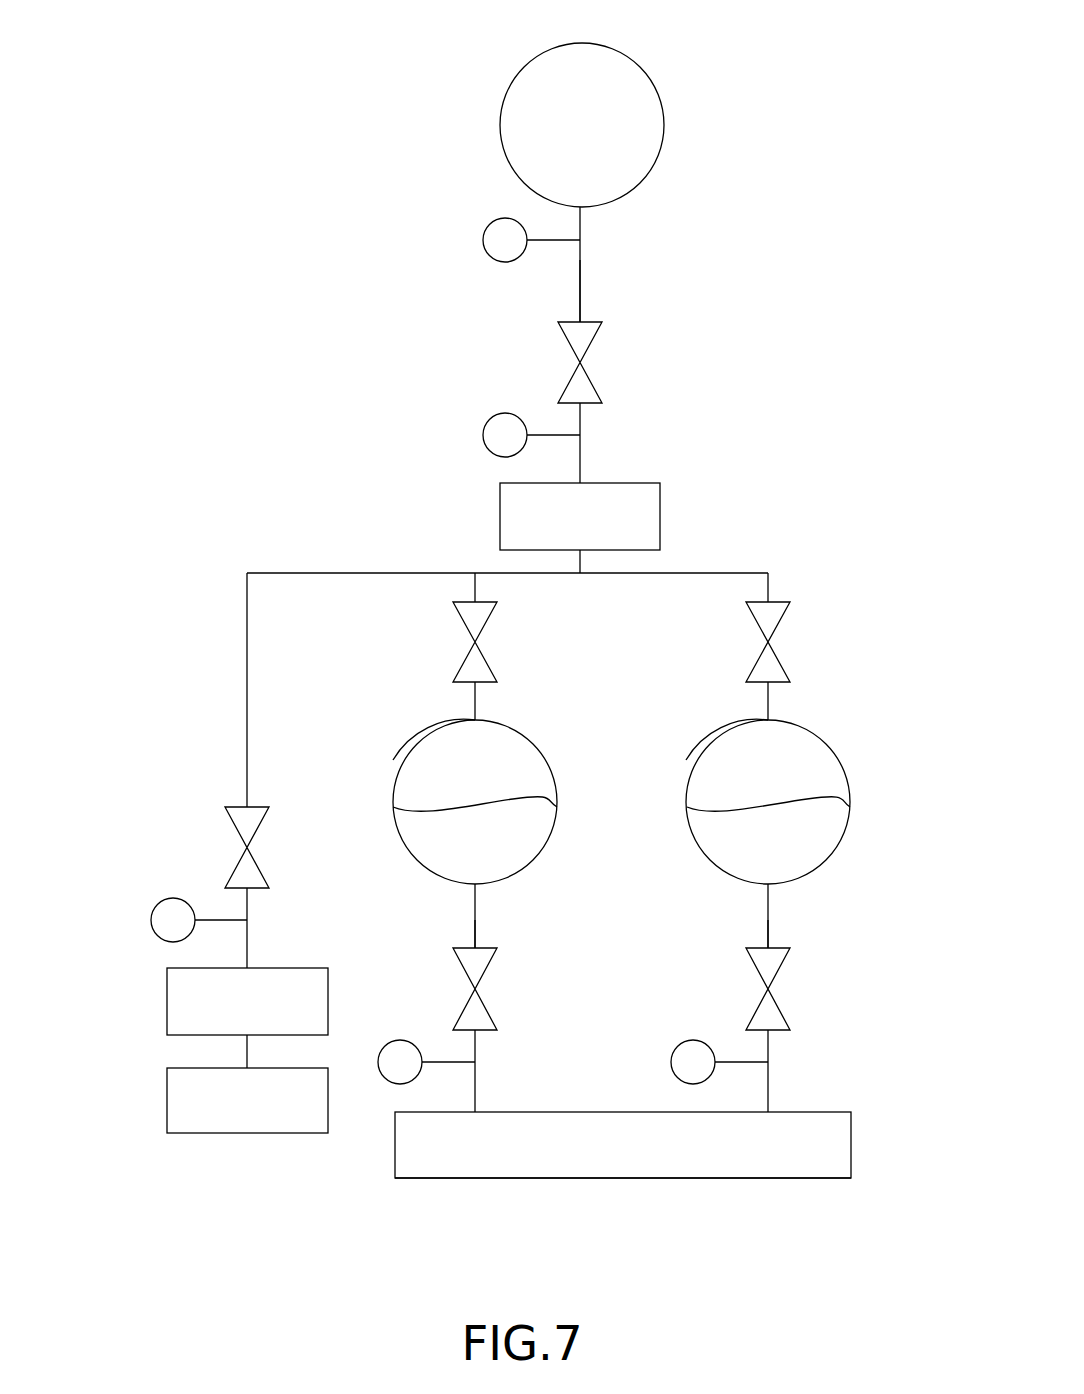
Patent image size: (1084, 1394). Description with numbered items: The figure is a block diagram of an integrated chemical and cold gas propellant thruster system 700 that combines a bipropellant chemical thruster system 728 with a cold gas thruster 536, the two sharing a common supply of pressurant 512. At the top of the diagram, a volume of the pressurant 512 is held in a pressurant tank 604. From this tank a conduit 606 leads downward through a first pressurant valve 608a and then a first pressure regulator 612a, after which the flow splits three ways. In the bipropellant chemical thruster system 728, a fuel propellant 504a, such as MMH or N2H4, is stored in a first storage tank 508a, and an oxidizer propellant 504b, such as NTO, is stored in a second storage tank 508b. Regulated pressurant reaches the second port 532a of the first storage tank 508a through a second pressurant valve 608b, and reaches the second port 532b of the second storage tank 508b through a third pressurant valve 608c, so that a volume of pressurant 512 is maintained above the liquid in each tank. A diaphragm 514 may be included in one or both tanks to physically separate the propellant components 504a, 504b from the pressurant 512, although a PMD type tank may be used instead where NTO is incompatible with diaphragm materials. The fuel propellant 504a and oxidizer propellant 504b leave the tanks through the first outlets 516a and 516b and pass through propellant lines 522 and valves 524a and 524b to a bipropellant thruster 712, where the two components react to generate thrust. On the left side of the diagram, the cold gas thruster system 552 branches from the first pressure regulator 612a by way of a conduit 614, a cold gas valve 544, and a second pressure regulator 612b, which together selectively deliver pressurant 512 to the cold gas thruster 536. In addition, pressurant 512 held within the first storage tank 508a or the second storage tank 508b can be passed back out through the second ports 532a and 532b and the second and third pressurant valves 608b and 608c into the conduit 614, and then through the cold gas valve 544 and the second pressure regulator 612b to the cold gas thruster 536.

The integrated chemical and cold gas propellant thruster system 700 is at (384, 87).
The pressurant 512 is at (603, 67).
The pressurant tank 604 is at (632, 188).
The conduit 606 is at (580, 290).
The first pressurant valve 608a is at (590, 342).
The first pressure regulator 612a is at (660, 512).
The conduit 614 is at (247, 630).
The cold gas thruster system 552 is at (220, 776).
The cold gas valve 544 is at (255, 878).
The second pressure regulator 612b is at (167, 992).
The cold gas thruster 536 is at (167, 1103).
The second pressurant valve 608b is at (462, 625).
The third pressurant valve 608c is at (785, 615).
The second port of the first storage tank 532a is at (475, 718).
The second port of the second storage tank 532b is at (768, 718).
The fuel propellant 504a is at (533, 835).
The oxidizer propellant 504b is at (828, 835).
The first storage tank 508a is at (408, 757).
The second storage tank 508b is at (700, 757).
The diaphragm 514 is at (405, 808).
The first outlet of the first storage tank 516a is at (475, 887).
The first outlet of the second storage tank 516b is at (768, 887).
The propellant line 522 is at (475, 928).
The valve 524a is at (487, 962).
The valve 524b is at (780, 962).
The bipropellant thruster 712 is at (851, 1143).
The bipropellant chemical thruster system 728 is at (823, 1214).